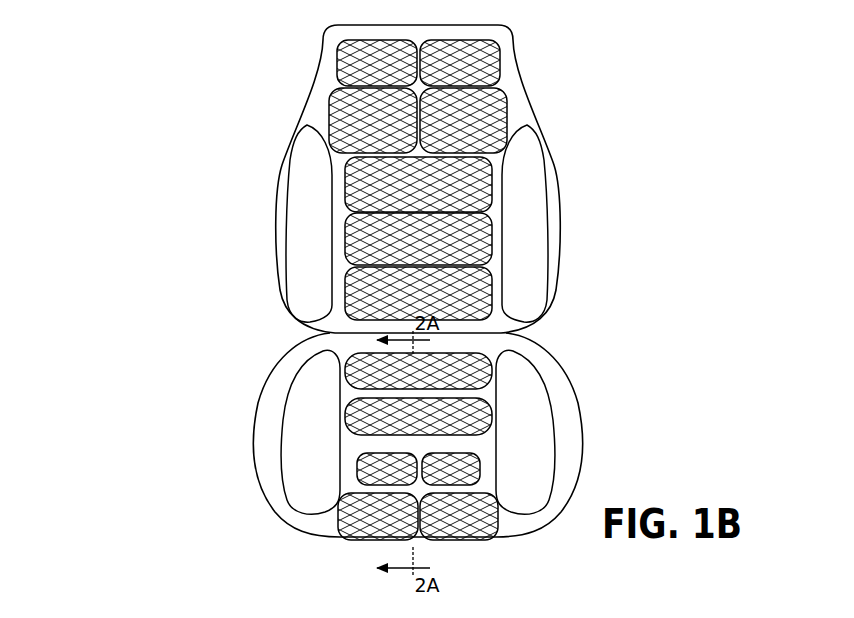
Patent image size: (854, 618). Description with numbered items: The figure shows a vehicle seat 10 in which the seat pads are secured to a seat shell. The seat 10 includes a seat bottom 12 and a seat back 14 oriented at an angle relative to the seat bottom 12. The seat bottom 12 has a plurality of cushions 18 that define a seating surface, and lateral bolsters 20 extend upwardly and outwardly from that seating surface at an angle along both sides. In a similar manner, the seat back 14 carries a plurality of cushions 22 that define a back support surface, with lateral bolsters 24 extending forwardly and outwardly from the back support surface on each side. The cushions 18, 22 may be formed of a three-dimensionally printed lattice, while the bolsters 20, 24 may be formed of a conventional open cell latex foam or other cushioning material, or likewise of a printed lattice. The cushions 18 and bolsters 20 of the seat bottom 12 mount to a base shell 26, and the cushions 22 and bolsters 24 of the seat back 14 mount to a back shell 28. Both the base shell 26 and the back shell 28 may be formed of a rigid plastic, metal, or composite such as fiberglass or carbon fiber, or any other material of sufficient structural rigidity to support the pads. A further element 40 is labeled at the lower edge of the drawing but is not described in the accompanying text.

The vehicle seat 10 is at (150, 252).
The seat bottom 12 is at (227, 412).
The seat back 14 is at (258, 163).
The cushions 18 is at (364, 410).
The lateral bolsters 20 is at (305, 439).
The cushions 22 is at (349, 69).
The lateral bolsters 24 is at (297, 209).
The base shell 26 is at (531, 349).
The back shell 28 is at (508, 68).
The seat component 40 is at (650, 615).